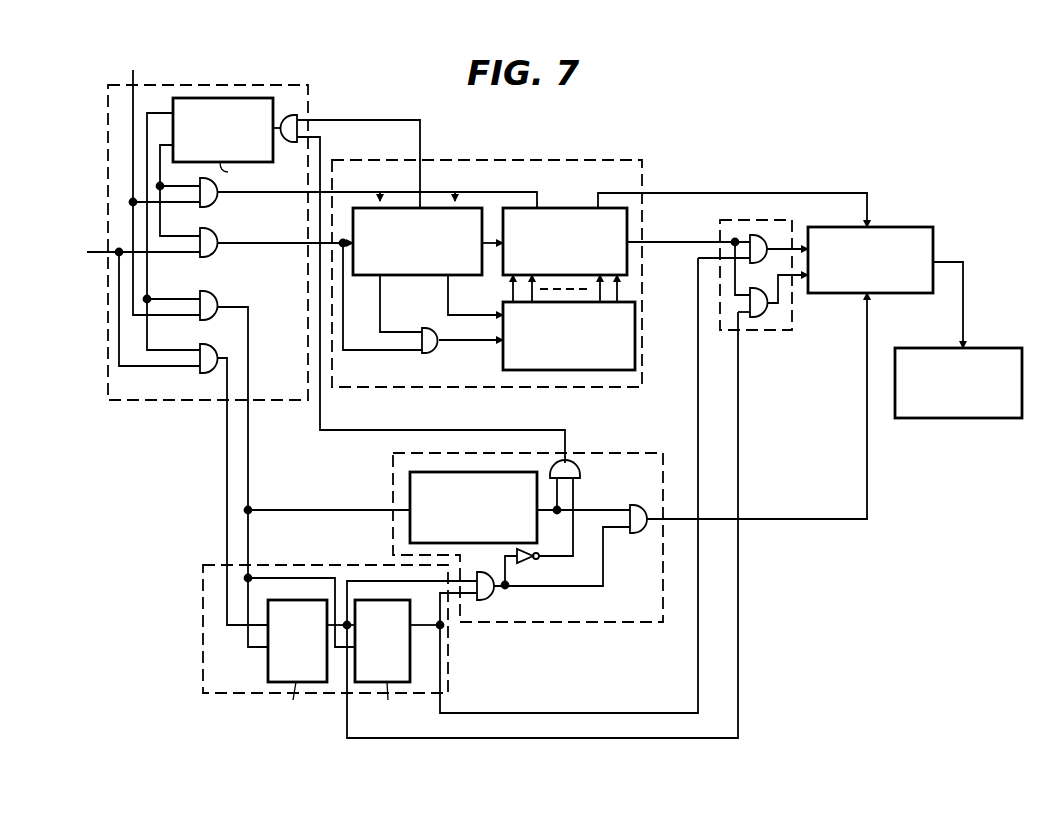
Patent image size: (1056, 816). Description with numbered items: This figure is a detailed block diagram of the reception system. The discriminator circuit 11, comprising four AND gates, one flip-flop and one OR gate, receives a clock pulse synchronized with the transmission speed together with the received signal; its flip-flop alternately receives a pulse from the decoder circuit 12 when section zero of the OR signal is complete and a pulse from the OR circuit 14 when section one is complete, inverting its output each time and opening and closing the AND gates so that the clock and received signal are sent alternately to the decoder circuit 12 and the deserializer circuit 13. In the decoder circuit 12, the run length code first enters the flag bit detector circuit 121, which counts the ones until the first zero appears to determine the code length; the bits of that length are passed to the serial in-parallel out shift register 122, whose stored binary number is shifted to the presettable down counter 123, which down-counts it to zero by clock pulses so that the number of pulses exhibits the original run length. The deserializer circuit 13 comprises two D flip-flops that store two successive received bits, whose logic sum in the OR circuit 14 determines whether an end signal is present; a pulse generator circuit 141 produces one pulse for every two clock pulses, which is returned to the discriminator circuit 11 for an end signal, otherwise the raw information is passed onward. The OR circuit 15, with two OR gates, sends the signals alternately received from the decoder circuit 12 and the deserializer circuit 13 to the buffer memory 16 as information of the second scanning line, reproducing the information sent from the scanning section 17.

The discriminator circuit 11 is at (303, 100).
The decoder circuit 12 is at (599, 260).
The deserializer circuit 13 is at (207, 582).
The OR circuit 14 is at (557, 470).
The OR circuit 15 is at (752, 330).
The buffer memory 16 is at (934, 230).
The scanning section 17 is at (1005, 353).
The flag bit detector circuit 121 is at (432, 275).
The serial in-parallel out shift register 122 is at (633, 370).
The presettable down counter 123 is at (584, 208).
The pulse generator circuit 141 is at (410, 478).